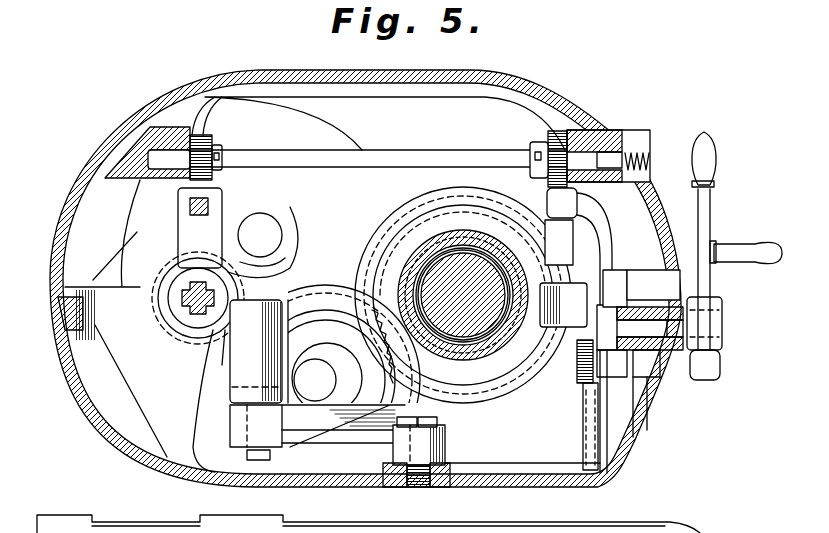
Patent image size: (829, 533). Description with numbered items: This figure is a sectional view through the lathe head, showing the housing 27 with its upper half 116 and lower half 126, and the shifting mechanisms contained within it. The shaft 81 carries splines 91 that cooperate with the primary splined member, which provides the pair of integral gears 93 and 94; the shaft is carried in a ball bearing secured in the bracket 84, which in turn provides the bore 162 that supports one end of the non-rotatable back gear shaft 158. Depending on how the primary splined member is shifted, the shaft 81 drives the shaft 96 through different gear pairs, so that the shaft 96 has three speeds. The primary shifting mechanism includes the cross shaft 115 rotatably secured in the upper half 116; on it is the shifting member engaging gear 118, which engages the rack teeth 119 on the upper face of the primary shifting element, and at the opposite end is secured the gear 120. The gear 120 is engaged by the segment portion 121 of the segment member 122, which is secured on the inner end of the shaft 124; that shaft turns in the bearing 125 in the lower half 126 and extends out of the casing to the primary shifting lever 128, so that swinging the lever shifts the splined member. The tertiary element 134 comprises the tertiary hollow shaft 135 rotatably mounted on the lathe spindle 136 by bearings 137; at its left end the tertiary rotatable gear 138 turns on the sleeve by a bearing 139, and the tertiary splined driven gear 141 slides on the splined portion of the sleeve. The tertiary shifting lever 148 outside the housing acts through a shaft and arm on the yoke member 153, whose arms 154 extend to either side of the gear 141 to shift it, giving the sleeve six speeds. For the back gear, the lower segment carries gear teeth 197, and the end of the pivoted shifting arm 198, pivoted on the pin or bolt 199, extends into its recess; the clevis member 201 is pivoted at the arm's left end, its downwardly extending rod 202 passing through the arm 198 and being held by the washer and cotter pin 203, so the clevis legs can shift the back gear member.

The housing 27 is at (70, 382).
The shaft 81 is at (173, 347).
The bracket 84 is at (137, 390).
The splines 91 is at (190, 305).
The gear 93 is at (150, 263).
The gear 94 is at (168, 282).
The shaft 96 is at (315, 380).
The cross shaft 115 is at (395, 160).
The upper half 116 is at (573, 97).
The shifting member engaging gear 118 is at (207, 135).
The rack teeth 119 is at (220, 178).
The gear 120 is at (622, 140).
The segment portion 121 is at (590, 203).
The segment member 122 is at (602, 265).
The shaft 124 is at (667, 378).
The bearing 125 is at (636, 376).
The lower half 126 is at (600, 490).
The primary shifting lever 128 is at (702, 218).
The tertiary element 134 is at (442, 249).
The tertiary hollow shaft 135 is at (452, 350).
The lathe spindle 136 is at (443, 289).
The bearings 137 is at (465, 245).
The tertiary rotatable gear 138 is at (585, 452).
The bearing 139 is at (488, 250).
The tertiary splined driven gear 141 is at (457, 440).
The tertiary shifting lever 148 is at (758, 255).
The yoke member 153 is at (560, 300).
The arms 154 is at (568, 368).
The back gear shaft 158 is at (262, 233).
The bore 162 is at (300, 222).
The gear teeth 197 is at (570, 426).
The pivoted shifting arm 198 is at (478, 447).
The pin or bolt 199 is at (385, 420).
The clevis member 201 is at (276, 293).
The rod 202 is at (160, 398).
The washer and cotter pin 203 is at (188, 477).